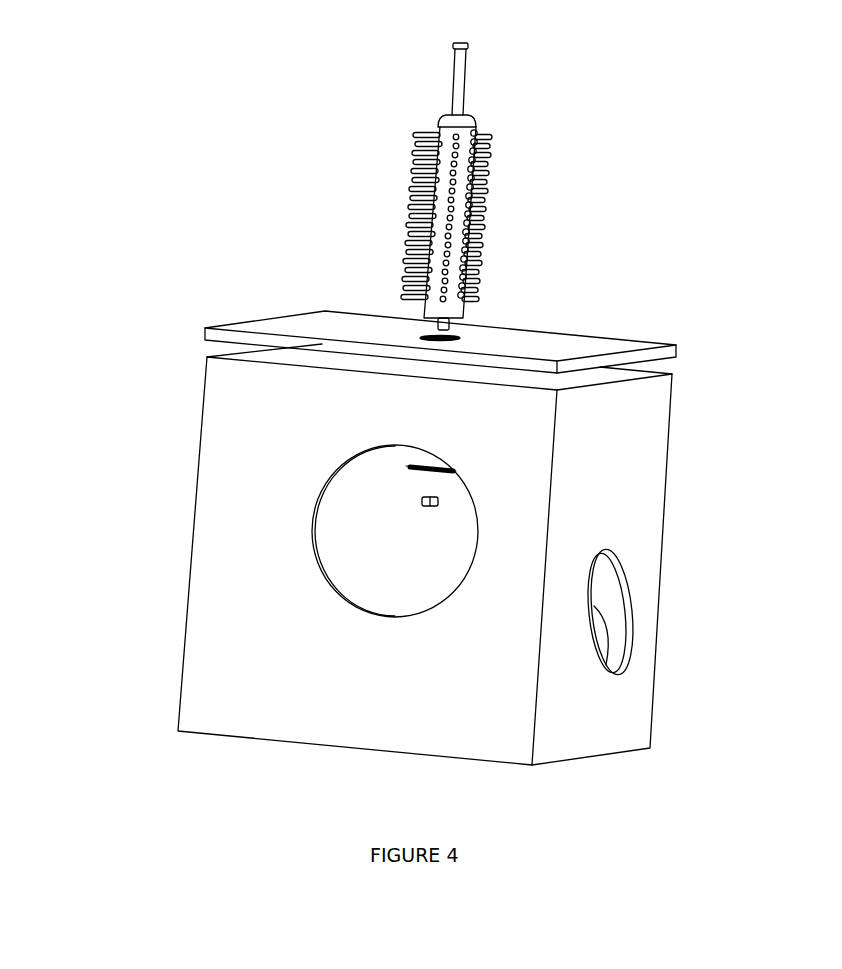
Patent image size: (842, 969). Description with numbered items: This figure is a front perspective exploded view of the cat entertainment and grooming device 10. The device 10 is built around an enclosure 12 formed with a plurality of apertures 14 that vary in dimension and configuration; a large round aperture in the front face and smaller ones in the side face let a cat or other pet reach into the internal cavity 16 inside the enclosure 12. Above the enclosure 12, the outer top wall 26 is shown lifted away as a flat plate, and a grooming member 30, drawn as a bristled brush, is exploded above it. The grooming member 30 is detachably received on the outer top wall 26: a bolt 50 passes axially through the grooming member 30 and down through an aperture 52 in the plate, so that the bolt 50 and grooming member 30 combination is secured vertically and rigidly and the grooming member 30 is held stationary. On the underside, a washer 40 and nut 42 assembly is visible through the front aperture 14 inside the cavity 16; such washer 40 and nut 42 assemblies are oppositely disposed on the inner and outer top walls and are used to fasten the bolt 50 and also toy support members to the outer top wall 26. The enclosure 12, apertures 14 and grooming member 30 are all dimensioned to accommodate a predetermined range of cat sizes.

The cat entertainment and grooming device 10 is at (690, 333).
The enclosure 12 is at (636, 470).
The apertures 14 is at (630, 644).
The internal cavity 16 is at (347, 530).
The outer top wall 26 is at (605, 336).
The grooming member 30 is at (488, 190).
The washer 40 is at (408, 467).
The nut 42 is at (427, 508).
The bolt 50 is at (462, 72).
The aperture 52 is at (418, 338).